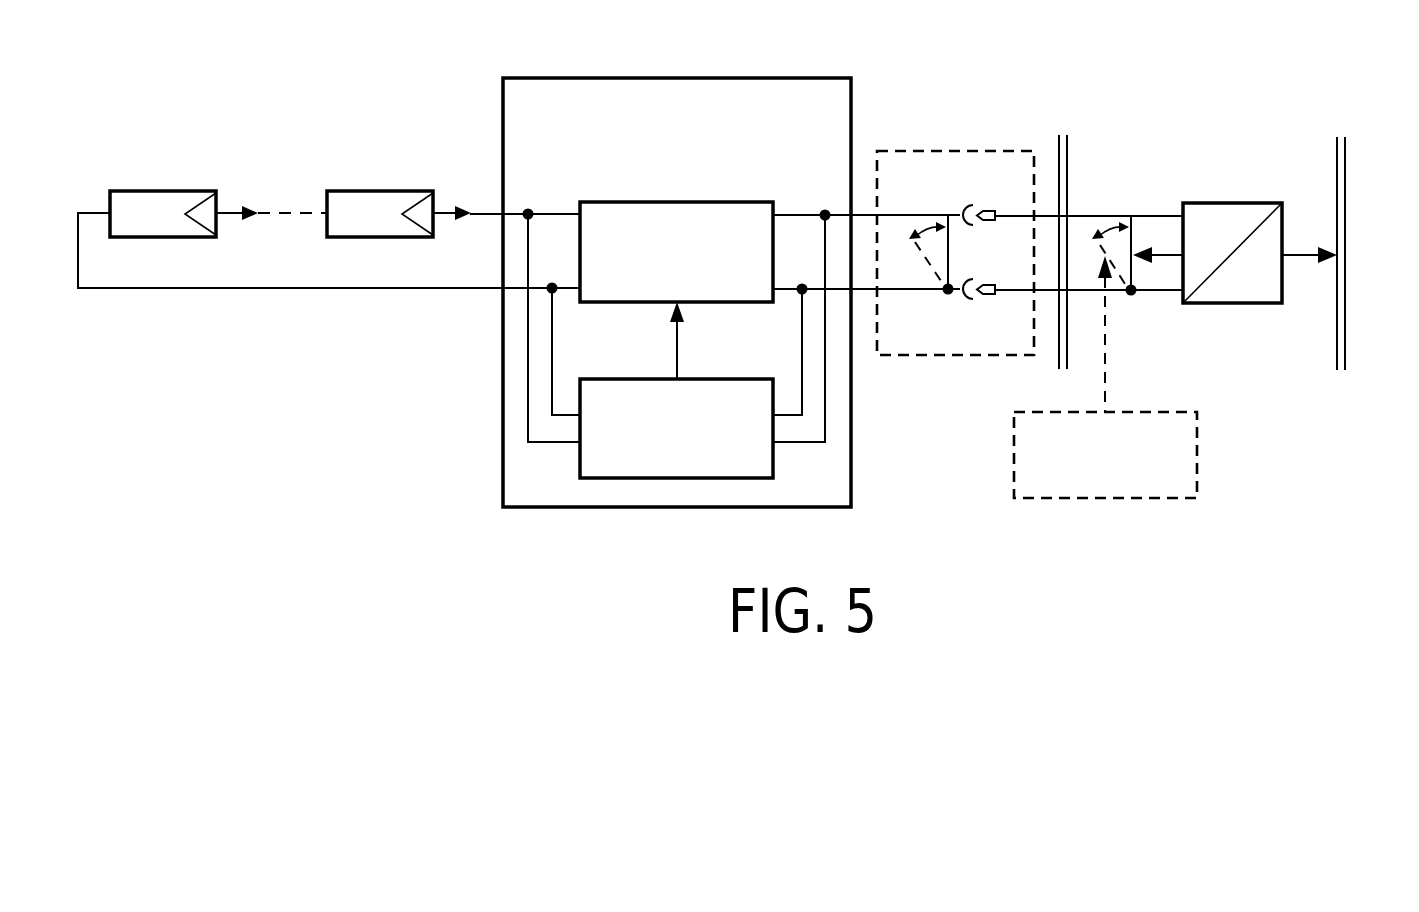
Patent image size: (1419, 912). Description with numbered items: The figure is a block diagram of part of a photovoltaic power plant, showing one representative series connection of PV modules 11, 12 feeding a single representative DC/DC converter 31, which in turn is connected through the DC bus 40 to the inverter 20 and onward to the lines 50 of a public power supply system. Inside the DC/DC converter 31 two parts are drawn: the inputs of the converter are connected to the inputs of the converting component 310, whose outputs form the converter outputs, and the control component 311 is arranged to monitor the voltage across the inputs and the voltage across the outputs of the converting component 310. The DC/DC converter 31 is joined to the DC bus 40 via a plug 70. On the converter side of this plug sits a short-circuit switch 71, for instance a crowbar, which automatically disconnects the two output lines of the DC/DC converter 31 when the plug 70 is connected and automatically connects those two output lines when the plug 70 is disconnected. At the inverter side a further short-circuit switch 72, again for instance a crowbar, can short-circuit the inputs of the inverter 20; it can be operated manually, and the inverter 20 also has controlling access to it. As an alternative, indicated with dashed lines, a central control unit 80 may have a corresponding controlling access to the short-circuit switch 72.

The PV module 11 is at (162, 190).
The PV module 12 is at (380, 190).
The DC/DC converter 31 is at (678, 78).
The converting component 310 is at (733, 202).
The control component 311 is at (733, 379).
The plug 70 is at (991, 151).
The short-circuit switch 71 is at (922, 227).
The short-circuit switch 72 is at (1109, 227).
The DC bus 40 is at (1068, 149).
The inverter 20 is at (1250, 203).
The lines of a public power supply system 50 is at (1345, 308).
The central control unit 80 is at (1160, 411).